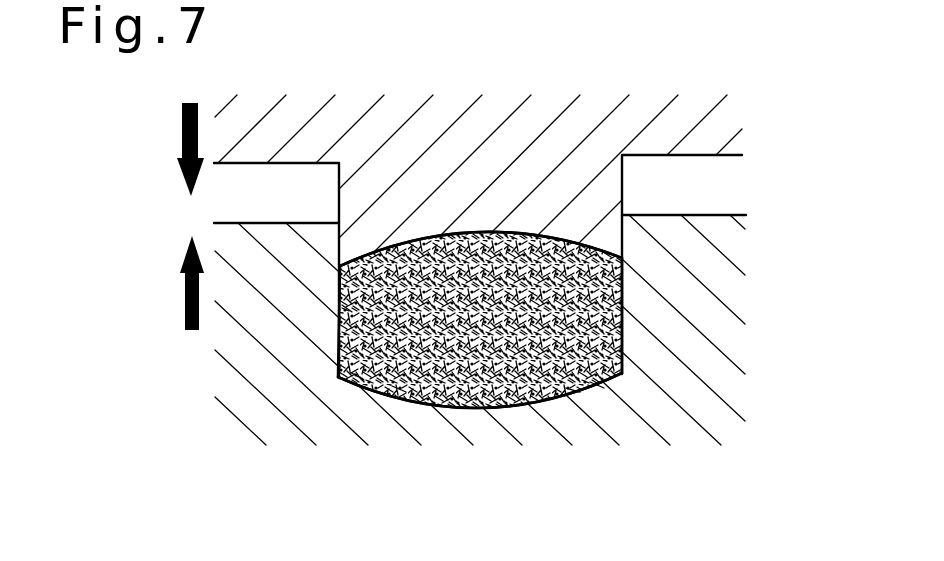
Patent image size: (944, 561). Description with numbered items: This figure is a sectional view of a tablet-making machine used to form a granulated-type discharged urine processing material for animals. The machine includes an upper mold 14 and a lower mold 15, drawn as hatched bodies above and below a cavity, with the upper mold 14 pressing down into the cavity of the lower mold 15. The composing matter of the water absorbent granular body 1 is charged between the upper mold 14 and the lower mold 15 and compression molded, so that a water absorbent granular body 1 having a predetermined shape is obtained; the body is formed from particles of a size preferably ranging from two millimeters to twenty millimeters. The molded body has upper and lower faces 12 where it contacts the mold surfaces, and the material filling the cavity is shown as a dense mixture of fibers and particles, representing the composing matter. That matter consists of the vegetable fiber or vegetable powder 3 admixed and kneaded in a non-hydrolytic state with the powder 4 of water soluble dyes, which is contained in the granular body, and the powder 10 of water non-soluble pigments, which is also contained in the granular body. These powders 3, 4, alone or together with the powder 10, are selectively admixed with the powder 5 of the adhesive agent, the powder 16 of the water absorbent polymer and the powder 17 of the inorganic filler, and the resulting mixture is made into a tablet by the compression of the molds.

The water absorbent granular body 1 is at (340, 316).
The vegetable fiber or vegetable powder 3 is at (399, 398).
The powder of water soluble dyes 4 is at (480, 384).
The powder of water non-soluble pigments 10 is at (430, 410).
The powder of the adhesive agent 5 is at (573, 400).
The end face 12 is at (493, 472).
The upper mold 14 is at (590, 223).
The lower mold 15 is at (660, 316).
The powder of the water absorbent polymer 16 is at (596, 394).
The powder of the inorganic filler 17 is at (357, 385).